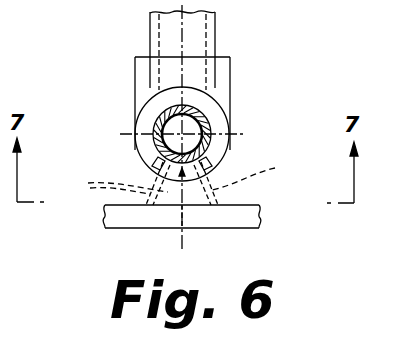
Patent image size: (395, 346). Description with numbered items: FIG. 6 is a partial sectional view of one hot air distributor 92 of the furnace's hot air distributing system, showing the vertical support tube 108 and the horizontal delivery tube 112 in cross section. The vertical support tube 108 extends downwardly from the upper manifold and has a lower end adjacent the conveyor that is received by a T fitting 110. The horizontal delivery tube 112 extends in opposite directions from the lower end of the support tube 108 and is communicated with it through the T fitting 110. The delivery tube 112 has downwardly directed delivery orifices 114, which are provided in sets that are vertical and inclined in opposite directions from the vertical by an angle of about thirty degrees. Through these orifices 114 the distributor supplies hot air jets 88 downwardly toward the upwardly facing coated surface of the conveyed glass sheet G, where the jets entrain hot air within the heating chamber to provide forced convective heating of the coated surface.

The vertical support tube 108 is at (216, 22).
The hot air distributor 92 is at (243, 65).
The T fitting 110 is at (134, 58).
The horizontal delivery tube 112 is at (157, 112).
The delivery orifices 114 is at (156, 160).
The hot air jets 88 is at (178, 179).
The ground plate G is at (254, 205).